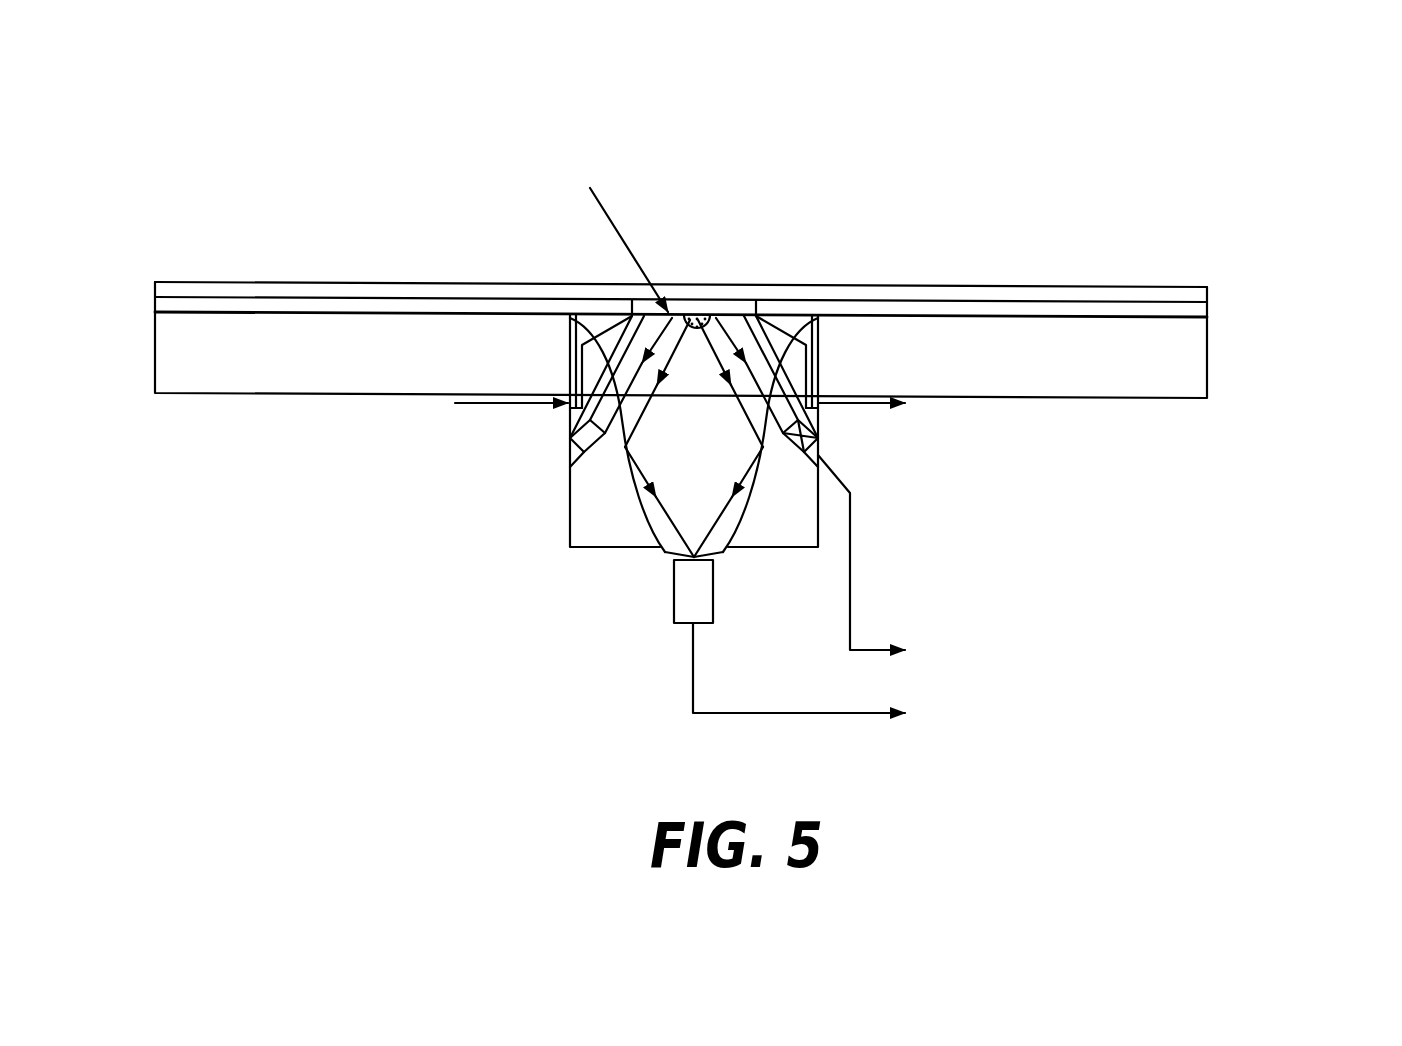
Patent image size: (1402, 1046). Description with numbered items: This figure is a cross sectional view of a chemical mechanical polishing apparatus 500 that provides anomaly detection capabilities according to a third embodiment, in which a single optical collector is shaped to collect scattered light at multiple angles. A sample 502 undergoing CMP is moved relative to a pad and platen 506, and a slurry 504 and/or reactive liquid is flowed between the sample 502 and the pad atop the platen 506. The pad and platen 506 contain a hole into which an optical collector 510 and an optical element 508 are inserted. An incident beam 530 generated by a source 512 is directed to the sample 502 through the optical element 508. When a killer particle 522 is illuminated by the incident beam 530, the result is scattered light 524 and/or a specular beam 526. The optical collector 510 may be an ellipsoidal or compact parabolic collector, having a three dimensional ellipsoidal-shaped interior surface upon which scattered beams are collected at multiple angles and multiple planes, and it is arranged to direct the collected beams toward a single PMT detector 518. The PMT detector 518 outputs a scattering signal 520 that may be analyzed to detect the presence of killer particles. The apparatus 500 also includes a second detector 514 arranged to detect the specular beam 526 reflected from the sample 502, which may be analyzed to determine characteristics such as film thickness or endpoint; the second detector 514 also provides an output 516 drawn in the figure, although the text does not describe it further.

The chemical mechanical polishing apparatus 500 is at (1150, 156).
The sample 502 is at (1207, 292).
The slurry 504 is at (1195, 310).
The pad and platen 506 is at (1207, 367).
The optical element 508 is at (613, 229).
The optical collector 510 is at (582, 513).
The source 512 is at (572, 452).
The second detector 514 is at (824, 439).
The photodetector output 516 is at (897, 561).
The PMT detector 518 is at (674, 597).
The scattering signal 520 is at (834, 678).
The killer particle 522 is at (702, 301).
The scattered light 524 is at (675, 545).
The specular beam 526 is at (818, 318).
The incident beam 530 is at (570, 318).